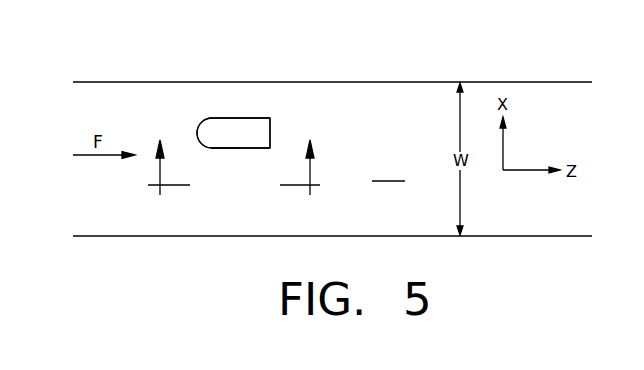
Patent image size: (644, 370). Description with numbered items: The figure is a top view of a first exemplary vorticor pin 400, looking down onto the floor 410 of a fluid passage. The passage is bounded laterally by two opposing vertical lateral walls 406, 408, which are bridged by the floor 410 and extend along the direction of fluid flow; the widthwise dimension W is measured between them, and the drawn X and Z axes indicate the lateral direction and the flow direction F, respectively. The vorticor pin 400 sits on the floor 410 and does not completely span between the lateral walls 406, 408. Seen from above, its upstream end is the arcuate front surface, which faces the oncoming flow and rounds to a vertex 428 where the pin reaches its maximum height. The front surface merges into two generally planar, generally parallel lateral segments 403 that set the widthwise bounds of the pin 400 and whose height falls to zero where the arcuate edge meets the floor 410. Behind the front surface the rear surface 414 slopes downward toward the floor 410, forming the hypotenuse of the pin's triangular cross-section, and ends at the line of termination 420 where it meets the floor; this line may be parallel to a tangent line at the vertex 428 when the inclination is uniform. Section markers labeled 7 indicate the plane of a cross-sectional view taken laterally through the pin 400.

The vorticor pin 400 is at (230, 125).
The lateral segments 403 is at (250, 118).
The line of termination 420 is at (272, 132).
The vertex 428 is at (199, 130).
The rear surface 414 is at (224, 147).
The floor 410 is at (389, 172).
The lateral wall 408 is at (542, 83).
The lateral wall 406 is at (532, 235).
The section line of FIG. 7 is at (234, 184).